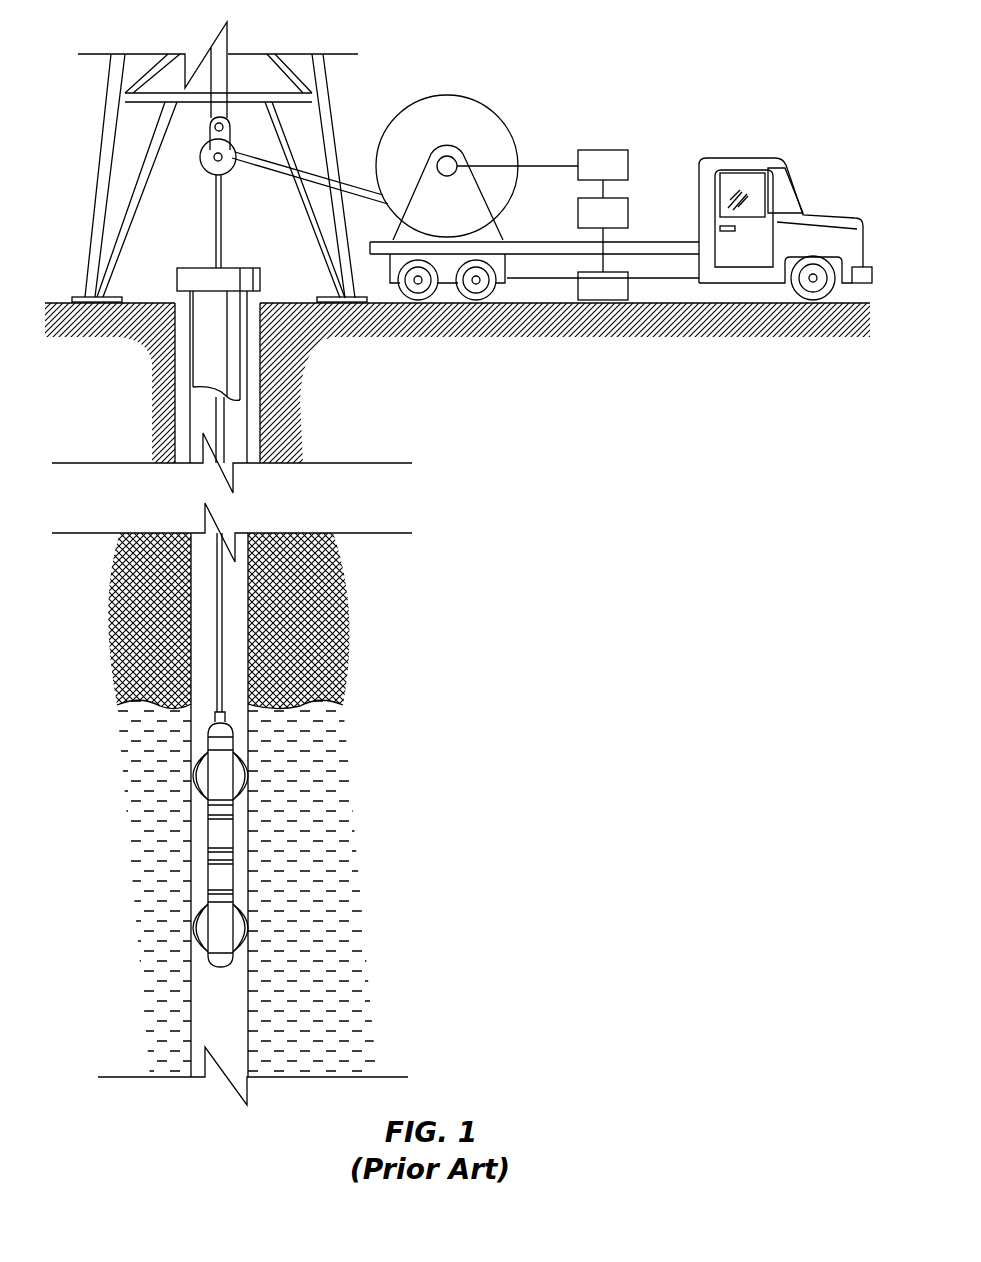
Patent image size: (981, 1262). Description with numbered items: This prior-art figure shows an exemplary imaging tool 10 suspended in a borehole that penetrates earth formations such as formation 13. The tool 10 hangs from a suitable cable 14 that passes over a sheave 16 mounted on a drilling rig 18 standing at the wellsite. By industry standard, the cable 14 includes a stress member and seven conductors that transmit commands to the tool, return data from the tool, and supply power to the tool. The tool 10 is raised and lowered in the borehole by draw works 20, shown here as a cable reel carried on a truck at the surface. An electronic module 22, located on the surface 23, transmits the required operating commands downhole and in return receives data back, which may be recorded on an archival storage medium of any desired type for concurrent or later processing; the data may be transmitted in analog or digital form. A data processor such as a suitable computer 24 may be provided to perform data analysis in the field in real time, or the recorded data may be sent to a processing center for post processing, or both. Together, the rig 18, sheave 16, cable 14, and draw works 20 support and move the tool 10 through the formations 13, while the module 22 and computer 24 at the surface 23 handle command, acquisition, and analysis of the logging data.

The imaging tool 10 is at (236, 833).
The earth formation 13 is at (384, 654).
The cable 14 is at (216, 242).
The sheave 16 is at (200, 157).
The drilling rig 18 is at (106, 100).
The draw works 20 is at (448, 95).
The electronic module 22 is at (617, 150).
The surface 23 is at (62, 302).
The computer 24 is at (617, 198).